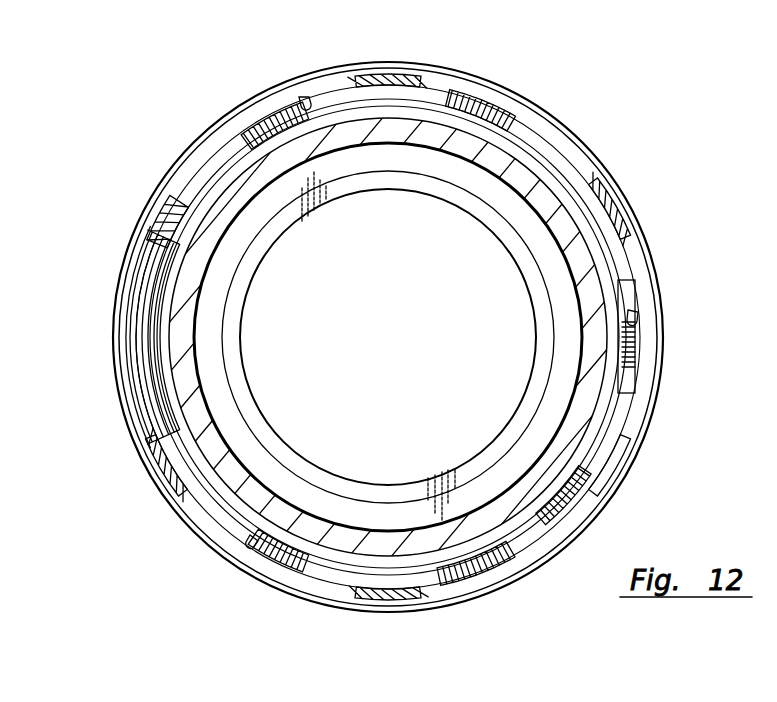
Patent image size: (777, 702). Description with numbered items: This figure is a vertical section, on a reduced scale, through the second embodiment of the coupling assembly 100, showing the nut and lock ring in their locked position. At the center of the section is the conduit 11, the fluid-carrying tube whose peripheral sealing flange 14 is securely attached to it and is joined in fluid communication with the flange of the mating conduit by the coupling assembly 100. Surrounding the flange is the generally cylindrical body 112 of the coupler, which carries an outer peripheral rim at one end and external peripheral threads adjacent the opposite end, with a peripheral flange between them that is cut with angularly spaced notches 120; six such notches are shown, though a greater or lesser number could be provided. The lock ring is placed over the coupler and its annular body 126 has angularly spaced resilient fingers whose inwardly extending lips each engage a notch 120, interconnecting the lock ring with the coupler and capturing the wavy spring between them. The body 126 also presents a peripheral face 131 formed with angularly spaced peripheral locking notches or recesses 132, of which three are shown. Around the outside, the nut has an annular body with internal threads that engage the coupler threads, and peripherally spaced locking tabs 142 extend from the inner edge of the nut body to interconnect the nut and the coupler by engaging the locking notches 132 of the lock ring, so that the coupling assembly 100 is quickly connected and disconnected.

The coupling assembly 100 is at (192, 99).
The conduit 11 is at (235, 307).
The peripheral sealing flange 14 is at (258, 207).
The generally cylindrical body 112 is at (590, 276).
The angularly spaced notches 120 is at (390, 82).
The annular body 126 is at (127, 269).
The peripheral face 131 is at (552, 150).
The locking notches 132 is at (303, 101).
The locking tabs 142 is at (247, 143).